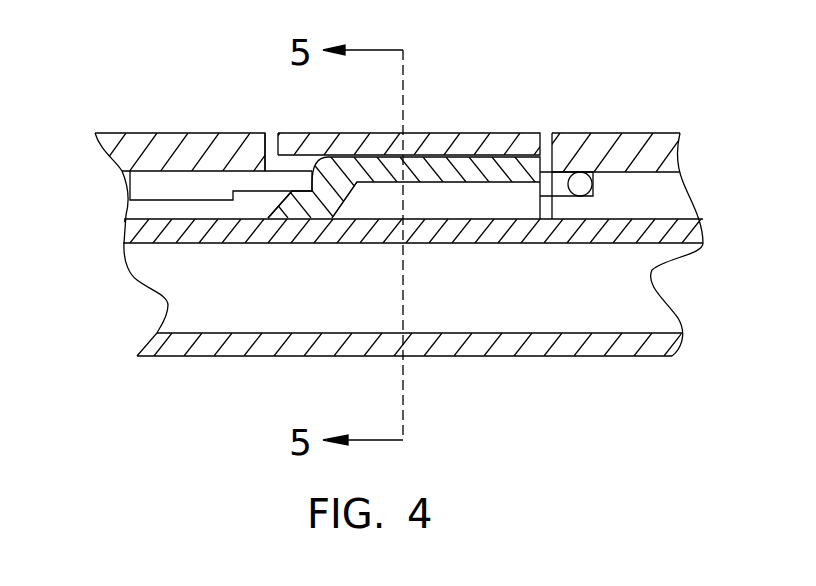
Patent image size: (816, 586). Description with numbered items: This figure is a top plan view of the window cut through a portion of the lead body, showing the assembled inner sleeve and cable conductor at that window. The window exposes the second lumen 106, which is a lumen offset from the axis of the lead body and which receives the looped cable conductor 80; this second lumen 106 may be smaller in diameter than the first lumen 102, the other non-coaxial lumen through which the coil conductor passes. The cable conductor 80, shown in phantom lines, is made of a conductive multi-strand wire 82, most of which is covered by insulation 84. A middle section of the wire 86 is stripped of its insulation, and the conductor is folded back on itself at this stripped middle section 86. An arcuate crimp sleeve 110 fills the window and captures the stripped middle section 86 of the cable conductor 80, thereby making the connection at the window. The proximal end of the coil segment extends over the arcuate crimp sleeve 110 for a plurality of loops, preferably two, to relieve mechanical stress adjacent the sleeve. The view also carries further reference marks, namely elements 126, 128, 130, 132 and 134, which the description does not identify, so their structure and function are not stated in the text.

The cable conductor 80 is at (148, 165).
The conductive multi-strand wire 82 is at (276, 150).
The insulation 84 is at (187, 185).
The middle section of the wire 86 is at (581, 178).
The first lumen 102 is at (668, 307).
The second lumen 106 is at (686, 199).
The arcuate crimp sleeve 110 is at (327, 134).
The cam member 126 is at (460, 182).
The passage 128 is at (435, 210).
The passage 130 is at (517, 213).
The wedge surface 132 is at (336, 212).
The tapered edge 134 is at (293, 206).